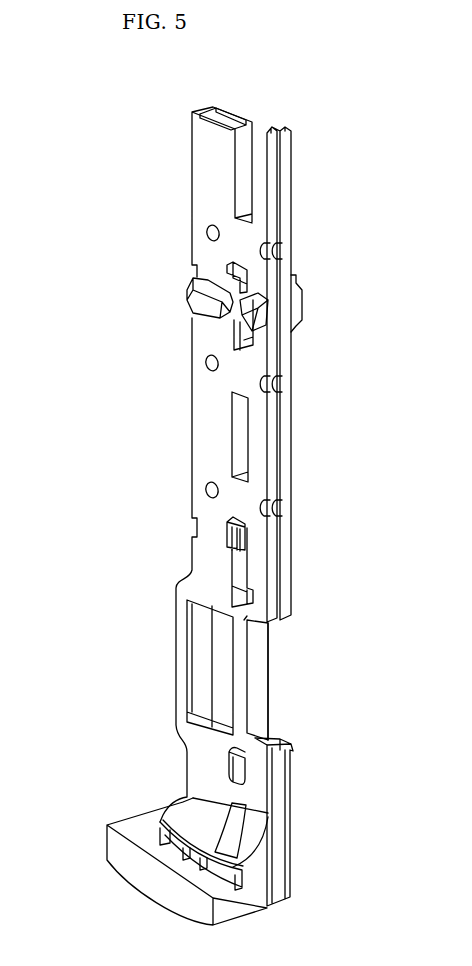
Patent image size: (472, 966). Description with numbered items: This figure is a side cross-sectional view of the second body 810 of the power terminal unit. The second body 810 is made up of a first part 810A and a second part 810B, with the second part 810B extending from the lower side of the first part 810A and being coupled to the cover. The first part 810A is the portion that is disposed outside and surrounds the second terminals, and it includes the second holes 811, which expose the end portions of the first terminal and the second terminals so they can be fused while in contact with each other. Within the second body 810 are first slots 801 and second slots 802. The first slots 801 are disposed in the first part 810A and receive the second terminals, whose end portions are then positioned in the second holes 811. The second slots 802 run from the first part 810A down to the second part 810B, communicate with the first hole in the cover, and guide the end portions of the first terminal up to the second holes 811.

The second body 810 is at (118, 86).
The first slots 801 is at (283, 272).
The first part 810A is at (200, 323).
The second holes 811 is at (274, 683).
The second slots 802 is at (275, 801).
The second part 810B is at (126, 866).